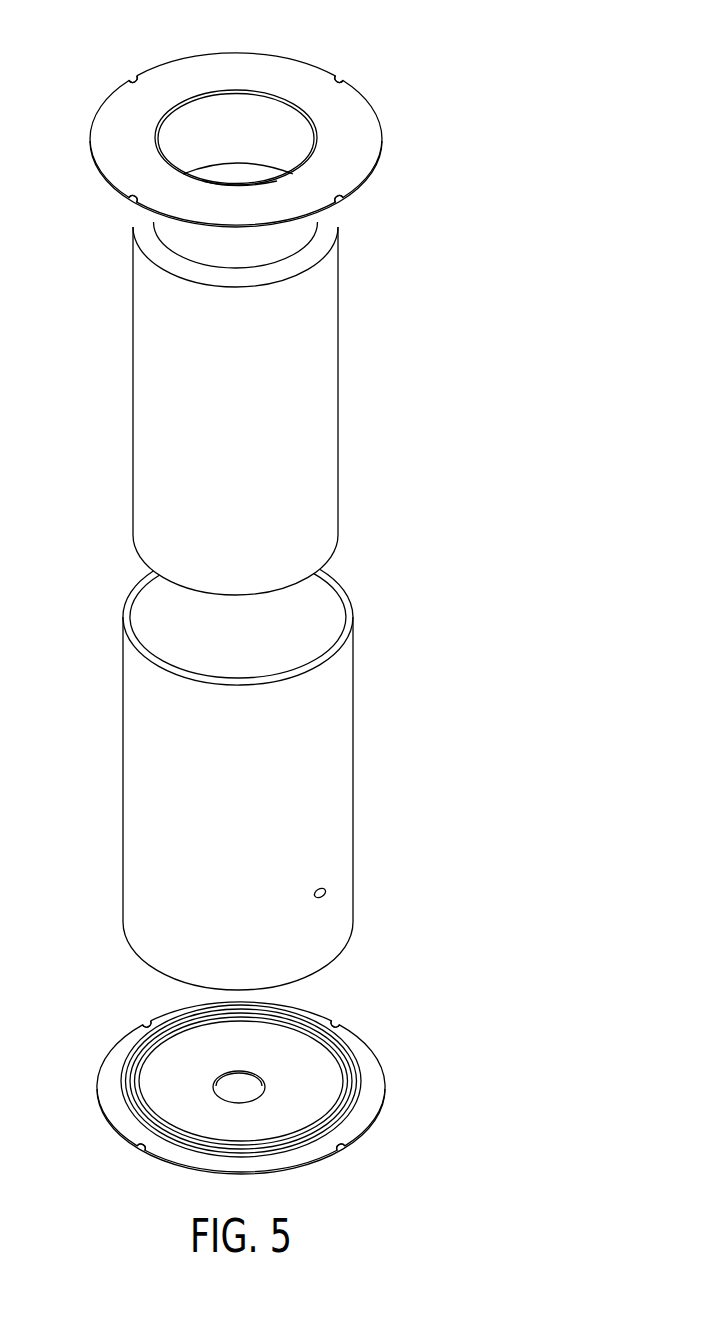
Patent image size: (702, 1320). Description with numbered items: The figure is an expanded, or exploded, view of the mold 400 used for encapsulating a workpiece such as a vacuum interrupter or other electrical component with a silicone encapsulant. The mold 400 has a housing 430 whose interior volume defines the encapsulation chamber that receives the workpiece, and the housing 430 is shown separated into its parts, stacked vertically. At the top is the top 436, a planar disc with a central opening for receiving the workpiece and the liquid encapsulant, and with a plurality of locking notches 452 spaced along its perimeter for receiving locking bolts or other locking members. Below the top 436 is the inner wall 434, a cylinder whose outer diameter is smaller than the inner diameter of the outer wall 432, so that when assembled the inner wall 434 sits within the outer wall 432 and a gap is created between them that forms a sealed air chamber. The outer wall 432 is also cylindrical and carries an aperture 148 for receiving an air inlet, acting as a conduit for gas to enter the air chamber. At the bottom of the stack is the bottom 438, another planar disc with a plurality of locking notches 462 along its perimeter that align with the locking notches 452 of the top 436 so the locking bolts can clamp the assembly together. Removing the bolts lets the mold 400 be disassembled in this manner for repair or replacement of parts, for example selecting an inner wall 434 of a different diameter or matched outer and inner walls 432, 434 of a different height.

The mold 400 is at (512, 80).
The housing 430 is at (440, 374).
The top 436 is at (108, 137).
The locking notches 452 is at (135, 77).
The inner wall 434 is at (148, 457).
The outer wall 432 is at (145, 815).
The aperture 148 is at (326, 890).
The bottom 438 is at (108, 1090).
The locking notches 462 is at (146, 1025).